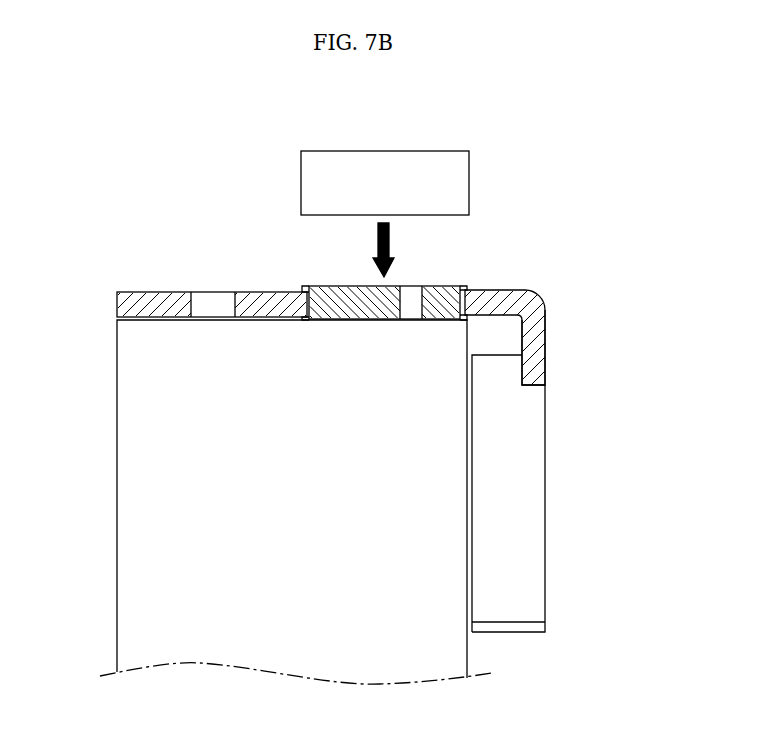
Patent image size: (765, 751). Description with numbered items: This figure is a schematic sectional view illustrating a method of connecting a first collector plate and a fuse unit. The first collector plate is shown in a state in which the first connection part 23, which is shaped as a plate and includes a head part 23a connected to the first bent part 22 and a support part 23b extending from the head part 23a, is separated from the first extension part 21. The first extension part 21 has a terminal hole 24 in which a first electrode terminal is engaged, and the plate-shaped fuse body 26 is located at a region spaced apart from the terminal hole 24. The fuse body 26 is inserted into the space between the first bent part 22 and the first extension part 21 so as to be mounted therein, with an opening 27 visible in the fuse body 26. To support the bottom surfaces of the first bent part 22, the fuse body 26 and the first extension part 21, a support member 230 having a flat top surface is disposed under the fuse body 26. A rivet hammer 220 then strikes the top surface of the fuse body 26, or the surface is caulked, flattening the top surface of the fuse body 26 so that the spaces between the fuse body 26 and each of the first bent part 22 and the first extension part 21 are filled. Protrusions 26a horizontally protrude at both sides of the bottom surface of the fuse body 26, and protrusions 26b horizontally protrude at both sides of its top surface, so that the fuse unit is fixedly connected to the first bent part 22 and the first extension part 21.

The rivet hammer 220 is at (383, 151).
The support member 230 is at (123, 495).
The first extension part 21 is at (152, 292).
The terminal hole 24 is at (210, 292).
The fuse body 26 is at (341, 321).
The hole 27 is at (409, 320).
The protrusions 26a is at (303, 320).
The protrusions 26b is at (302, 289).
The first bent part 22 is at (542, 291).
The first connection part 23 is at (577, 468).
The head part 23a is at (543, 335).
The support part 23b is at (549, 493).